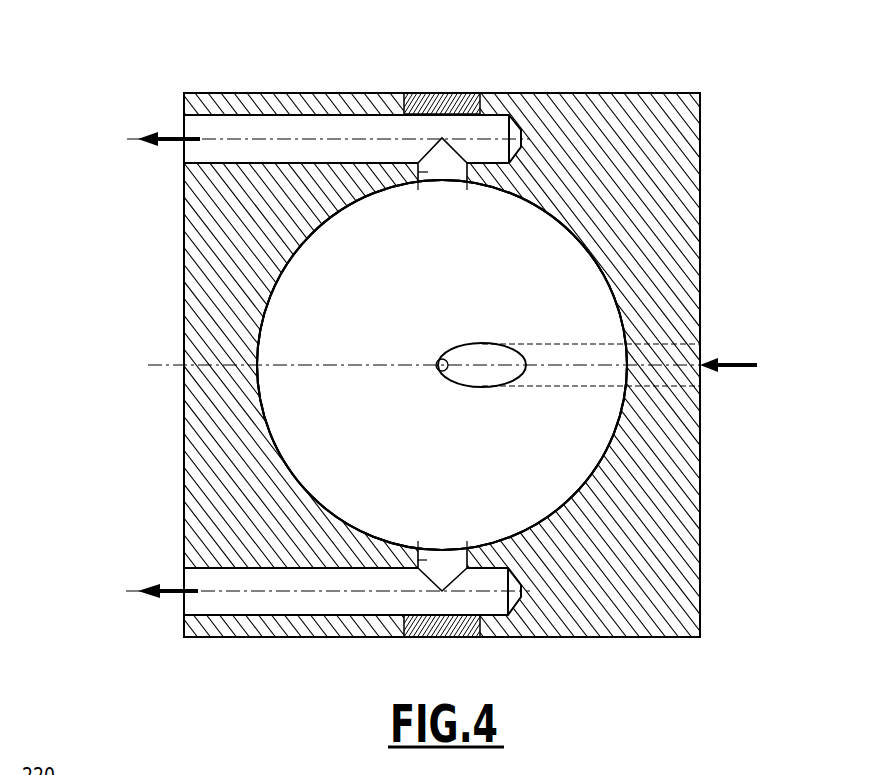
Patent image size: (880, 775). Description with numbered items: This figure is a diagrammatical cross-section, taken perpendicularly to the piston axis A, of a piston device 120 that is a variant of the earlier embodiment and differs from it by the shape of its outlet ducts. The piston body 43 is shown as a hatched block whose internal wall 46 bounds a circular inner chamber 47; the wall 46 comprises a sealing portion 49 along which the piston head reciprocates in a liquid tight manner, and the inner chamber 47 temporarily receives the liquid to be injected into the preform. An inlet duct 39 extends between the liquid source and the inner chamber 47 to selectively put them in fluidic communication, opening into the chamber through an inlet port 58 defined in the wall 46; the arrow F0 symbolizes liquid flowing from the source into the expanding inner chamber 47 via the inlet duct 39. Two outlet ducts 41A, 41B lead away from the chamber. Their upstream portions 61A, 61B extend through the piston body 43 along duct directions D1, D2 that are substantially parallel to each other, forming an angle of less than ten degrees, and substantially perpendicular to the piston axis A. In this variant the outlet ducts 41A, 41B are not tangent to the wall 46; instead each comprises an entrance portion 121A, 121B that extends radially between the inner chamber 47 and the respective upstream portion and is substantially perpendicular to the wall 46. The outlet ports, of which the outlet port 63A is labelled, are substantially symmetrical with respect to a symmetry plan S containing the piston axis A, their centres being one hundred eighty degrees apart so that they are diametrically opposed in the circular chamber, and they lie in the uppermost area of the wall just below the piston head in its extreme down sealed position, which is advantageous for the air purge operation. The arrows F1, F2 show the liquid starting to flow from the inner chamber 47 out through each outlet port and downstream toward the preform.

The piston device 120 is at (124, 58).
The piston body 43 is at (605, 118).
The upstream portion 61A is at (523, 82).
The upstream portion 61B is at (525, 650).
The outlet duct 41A is at (190, 125).
The outlet duct 41B is at (190, 608).
The outlet port 63A is at (457, 180).
The entrance portion 121A is at (418, 172).
The entrance portion 121B is at (417, 560).
The internal wall 46 is at (290, 280).
The sealing portion 49 is at (272, 328).
The inner chamber 47 is at (567, 270).
The inlet port 58 is at (483, 377).
The inlet duct 39 is at (672, 350).
The piston axis A is at (436, 364).
The symmetry plan S is at (375, 365).
The duct direction D1 is at (257, 140).
The duct direction D2 is at (257, 593).
The arrow F1 is at (180, 145).
The arrow F2 is at (180, 588).
The arrow F0 is at (743, 370).